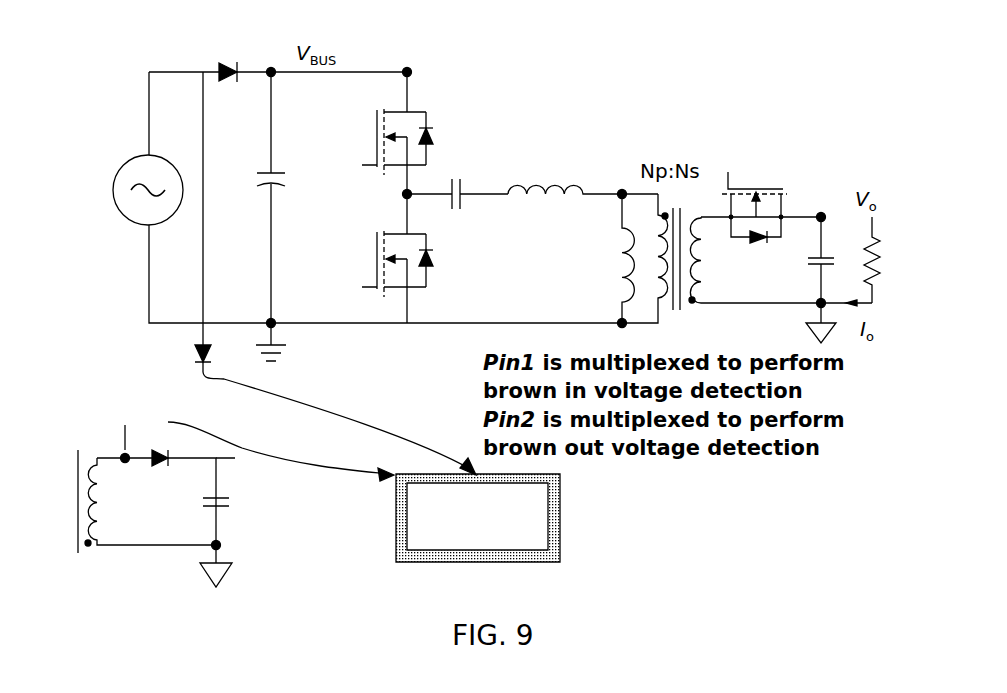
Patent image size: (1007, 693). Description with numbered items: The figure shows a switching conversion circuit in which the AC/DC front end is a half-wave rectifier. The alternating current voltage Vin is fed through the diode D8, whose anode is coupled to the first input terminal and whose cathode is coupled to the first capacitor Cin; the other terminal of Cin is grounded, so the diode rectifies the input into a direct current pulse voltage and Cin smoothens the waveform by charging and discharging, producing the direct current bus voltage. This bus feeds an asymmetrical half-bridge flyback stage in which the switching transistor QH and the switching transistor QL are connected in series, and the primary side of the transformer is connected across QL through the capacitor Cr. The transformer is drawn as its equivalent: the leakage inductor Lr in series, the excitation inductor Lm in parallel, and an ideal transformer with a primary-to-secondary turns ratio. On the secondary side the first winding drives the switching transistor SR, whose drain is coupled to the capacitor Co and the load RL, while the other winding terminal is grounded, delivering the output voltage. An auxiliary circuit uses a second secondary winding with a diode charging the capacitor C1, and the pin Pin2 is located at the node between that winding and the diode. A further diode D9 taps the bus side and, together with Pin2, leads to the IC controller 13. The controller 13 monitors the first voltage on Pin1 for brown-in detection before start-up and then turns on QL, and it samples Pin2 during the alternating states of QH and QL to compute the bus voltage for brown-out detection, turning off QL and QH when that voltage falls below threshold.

The IC controller 13 is at (560, 518).
The input alternating current voltage Vin is at (129, 190).
The diode D8 is at (208, 60).
The diode D9 is at (184, 358).
The first capacitor Cin is at (287, 197).
The switching transistor QH is at (385, 123).
The switching transistor QL is at (385, 264).
The capacitor Cr is at (457, 212).
The leakage inductor Lr is at (583, 207).
The excitation inductor Lm is at (609, 258).
The switching transistor SR is at (761, 194).
The capacitor Co is at (807, 280).
The load RL is at (890, 260).
The capacitor C1 is at (203, 522).
The pin Pin1 is at (281, 434).
The pin Pin2 is at (122, 424).